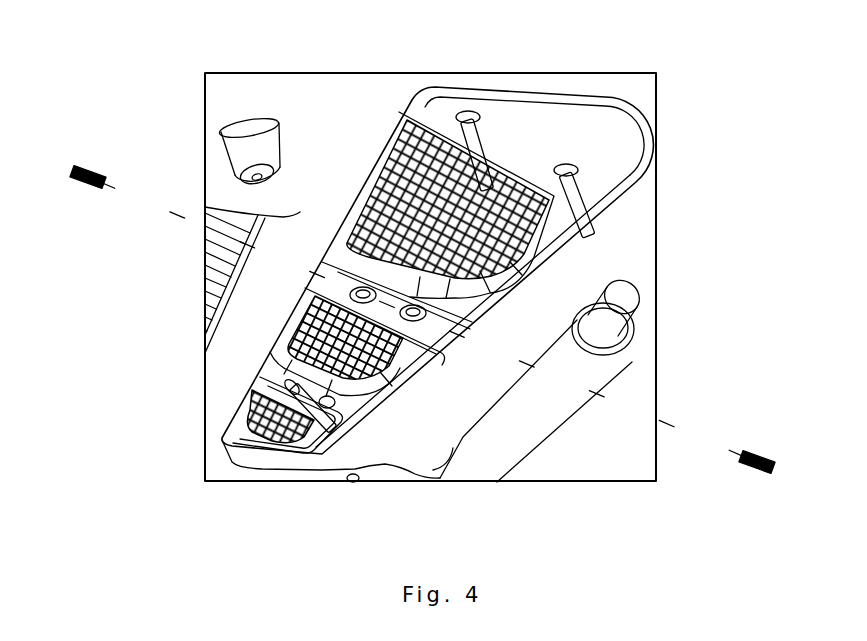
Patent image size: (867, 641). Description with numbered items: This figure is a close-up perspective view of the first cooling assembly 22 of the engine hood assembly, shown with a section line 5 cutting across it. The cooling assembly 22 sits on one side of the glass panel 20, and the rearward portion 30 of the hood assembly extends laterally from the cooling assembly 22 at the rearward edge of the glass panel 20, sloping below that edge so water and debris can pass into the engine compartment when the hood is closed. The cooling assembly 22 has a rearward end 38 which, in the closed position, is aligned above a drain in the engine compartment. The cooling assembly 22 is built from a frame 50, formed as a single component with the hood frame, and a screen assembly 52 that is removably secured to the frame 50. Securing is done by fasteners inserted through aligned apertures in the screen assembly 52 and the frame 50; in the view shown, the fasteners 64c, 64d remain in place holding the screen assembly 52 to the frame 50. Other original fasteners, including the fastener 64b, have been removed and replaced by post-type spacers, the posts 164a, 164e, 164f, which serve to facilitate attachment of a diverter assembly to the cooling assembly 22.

The section line 5- 5 is at (76, 193).
The glass panel 20 is at (211, 265).
The first cooling assembly 22 is at (639, 142).
The rearward portion 30 is at (228, 202).
The rearward end 38 is at (567, 125).
The frame 50 is at (486, 310).
The screen assembly 52 is at (643, 284).
The fastener 64b is at (353, 431).
The fastener 64c is at (311, 306).
The fastener 64d is at (291, 355).
The post 164a is at (291, 405).
The post 164e is at (481, 124).
The post 164f is at (595, 209).